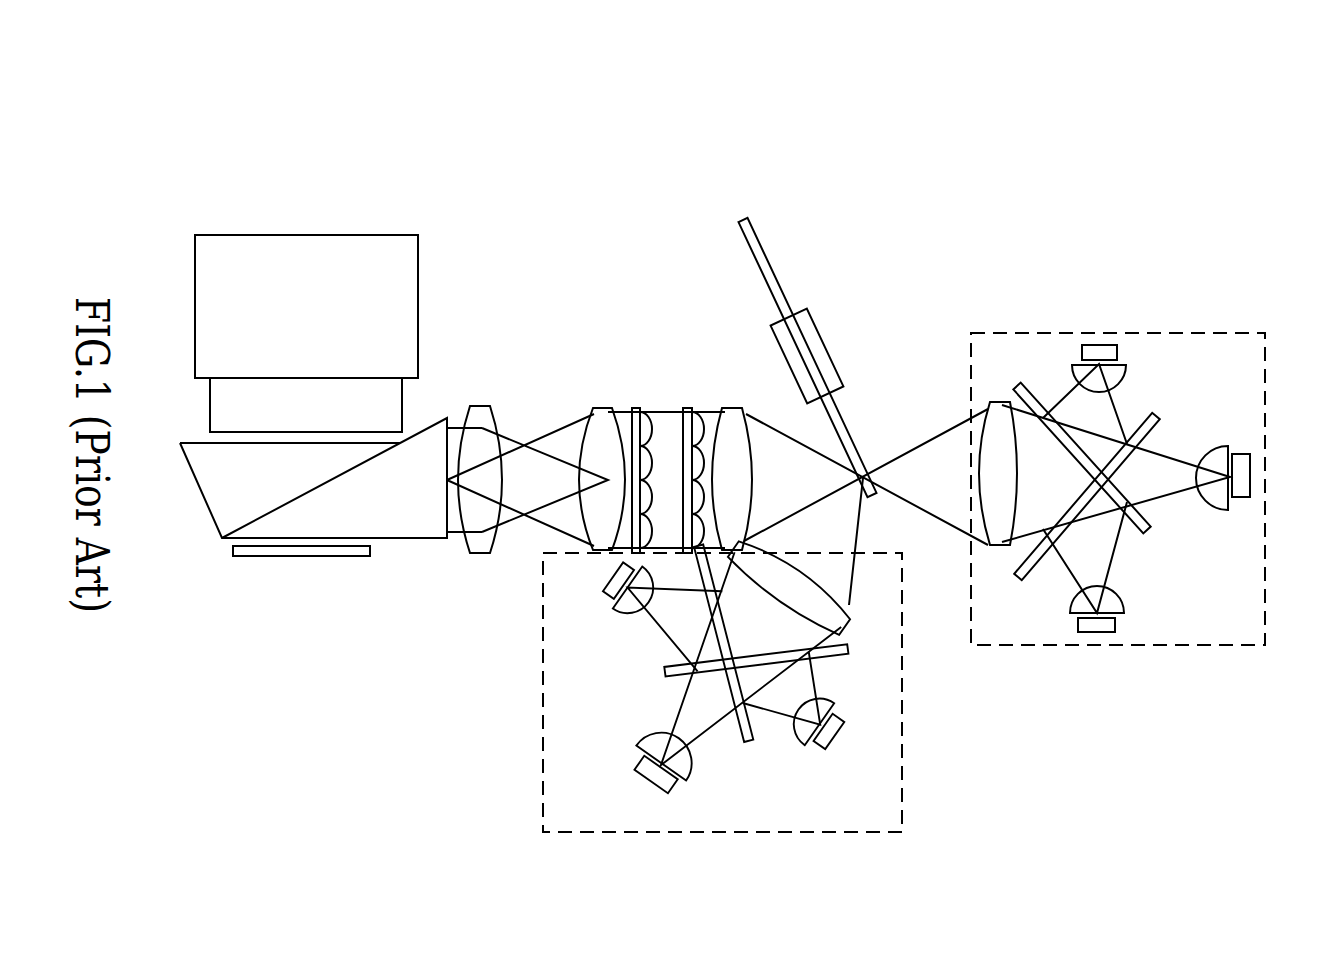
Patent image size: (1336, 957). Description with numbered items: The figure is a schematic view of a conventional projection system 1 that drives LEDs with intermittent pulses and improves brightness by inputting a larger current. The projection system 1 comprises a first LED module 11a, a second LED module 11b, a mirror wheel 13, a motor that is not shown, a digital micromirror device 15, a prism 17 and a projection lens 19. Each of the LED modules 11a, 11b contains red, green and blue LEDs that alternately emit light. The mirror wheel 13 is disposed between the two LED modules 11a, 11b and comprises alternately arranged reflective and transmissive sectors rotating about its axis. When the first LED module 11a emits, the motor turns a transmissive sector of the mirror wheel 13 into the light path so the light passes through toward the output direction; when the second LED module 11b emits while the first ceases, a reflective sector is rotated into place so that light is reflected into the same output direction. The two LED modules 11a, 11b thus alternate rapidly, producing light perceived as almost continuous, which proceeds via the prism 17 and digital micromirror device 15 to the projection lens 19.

The projection system 1 is at (843, 148).
The first LED module 11a is at (1265, 513).
The second LED module 11b is at (902, 718).
The mirror wheel 13 is at (768, 262).
The digital micromirror device 15 is at (283, 557).
The prism 17 is at (204, 497).
The projection lens 19 is at (418, 306).